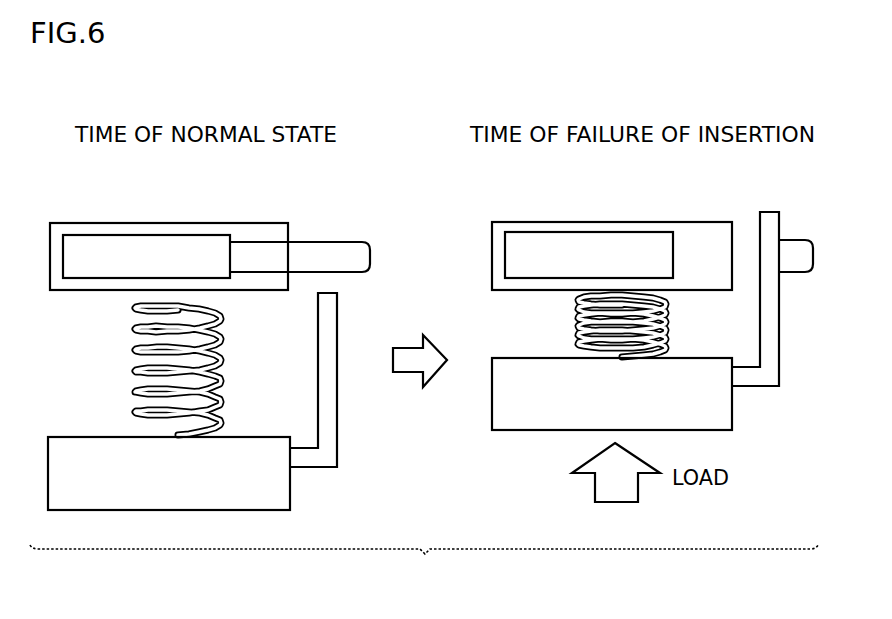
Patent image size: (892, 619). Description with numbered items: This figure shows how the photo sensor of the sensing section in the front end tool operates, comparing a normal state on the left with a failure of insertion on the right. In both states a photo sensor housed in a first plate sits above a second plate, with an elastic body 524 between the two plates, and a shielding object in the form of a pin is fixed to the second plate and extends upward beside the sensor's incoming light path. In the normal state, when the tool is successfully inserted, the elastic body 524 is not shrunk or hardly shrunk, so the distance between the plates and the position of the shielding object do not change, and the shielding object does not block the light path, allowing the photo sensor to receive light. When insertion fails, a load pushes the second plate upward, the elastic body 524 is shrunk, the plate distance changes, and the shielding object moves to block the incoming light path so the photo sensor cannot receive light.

The elastic body 524 is at (137, 328).